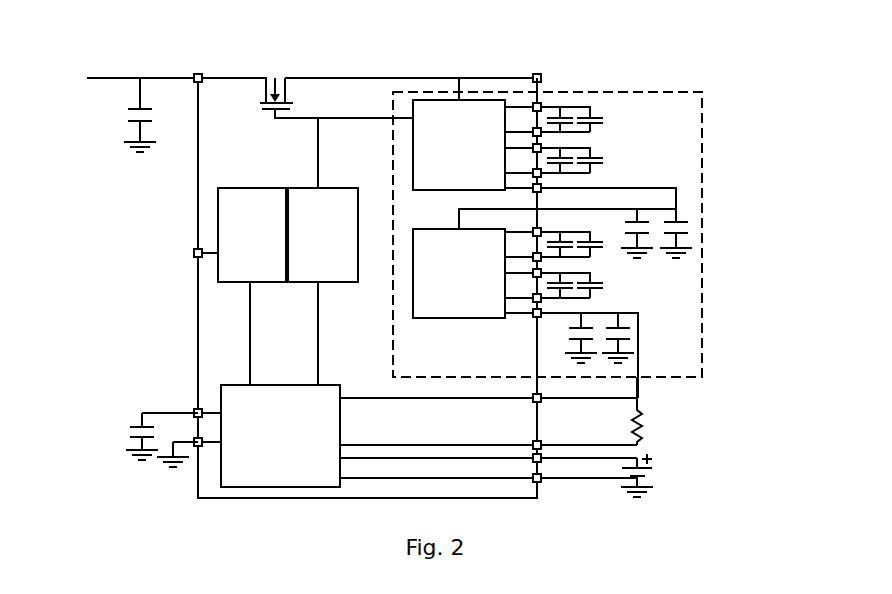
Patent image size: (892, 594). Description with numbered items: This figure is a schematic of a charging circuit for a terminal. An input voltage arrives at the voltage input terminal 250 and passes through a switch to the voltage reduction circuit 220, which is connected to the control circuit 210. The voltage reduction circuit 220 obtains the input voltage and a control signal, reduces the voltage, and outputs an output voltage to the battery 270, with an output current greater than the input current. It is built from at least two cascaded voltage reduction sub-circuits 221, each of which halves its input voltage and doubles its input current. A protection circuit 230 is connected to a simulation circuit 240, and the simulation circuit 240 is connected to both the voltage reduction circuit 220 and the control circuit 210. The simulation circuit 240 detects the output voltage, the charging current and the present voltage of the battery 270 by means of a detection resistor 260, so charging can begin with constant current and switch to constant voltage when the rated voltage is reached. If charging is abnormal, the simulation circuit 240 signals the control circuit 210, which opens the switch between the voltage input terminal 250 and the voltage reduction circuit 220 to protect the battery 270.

The voltage input terminal 250 is at (312, 99).
The voltage reduction circuit 220 is at (680, 125).
The voltage reduction sub-circuit 221 is at (459, 209).
The control circuit 210 is at (323, 286).
The protection circuit 230 is at (240, 286).
The simulation circuit 240 is at (381, 436).
The detection resistor 260 is at (712, 411).
The battery 270 is at (681, 475).